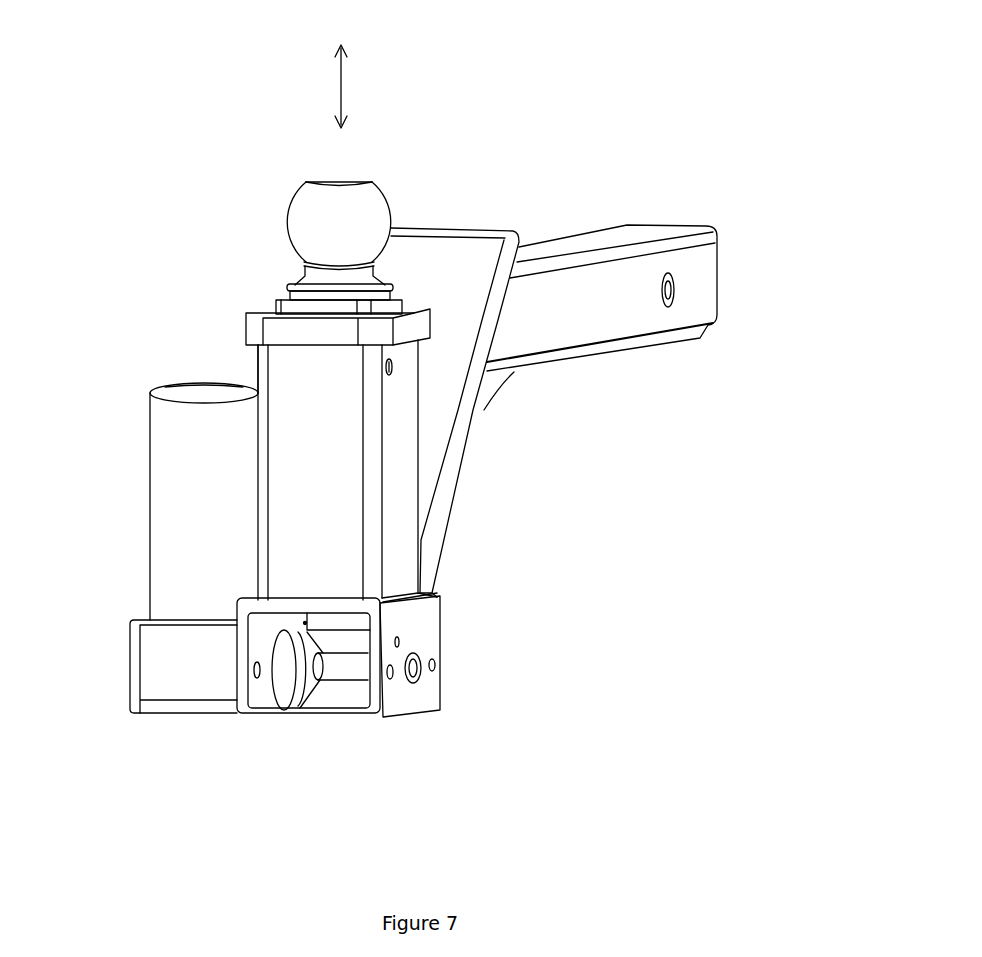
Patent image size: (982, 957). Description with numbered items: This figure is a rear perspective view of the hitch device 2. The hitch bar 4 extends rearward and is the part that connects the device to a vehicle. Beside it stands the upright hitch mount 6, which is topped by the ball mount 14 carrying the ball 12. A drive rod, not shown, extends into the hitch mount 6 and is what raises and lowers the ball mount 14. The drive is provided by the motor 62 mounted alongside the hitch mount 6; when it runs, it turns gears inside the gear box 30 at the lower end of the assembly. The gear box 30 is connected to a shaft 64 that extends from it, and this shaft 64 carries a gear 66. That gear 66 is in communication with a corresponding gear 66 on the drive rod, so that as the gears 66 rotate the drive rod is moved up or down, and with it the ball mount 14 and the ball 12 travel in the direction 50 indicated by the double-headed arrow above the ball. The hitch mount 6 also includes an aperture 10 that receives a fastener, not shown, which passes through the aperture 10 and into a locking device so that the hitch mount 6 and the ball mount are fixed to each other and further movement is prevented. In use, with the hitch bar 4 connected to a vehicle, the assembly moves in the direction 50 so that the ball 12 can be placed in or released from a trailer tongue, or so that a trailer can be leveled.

The hitch device 2 is at (600, 103).
The hitch bar 4 is at (703, 257).
The hitch mount 6 is at (335, 454).
The aperture 10 is at (406, 372).
The ball 12 is at (305, 213).
The ball mount 14 is at (300, 302).
The gear box 30 is at (152, 672).
The direction 50 is at (340, 85).
The motor 62 is at (185, 470).
The shaft 64 is at (357, 675).
The gear 66 is at (340, 657).